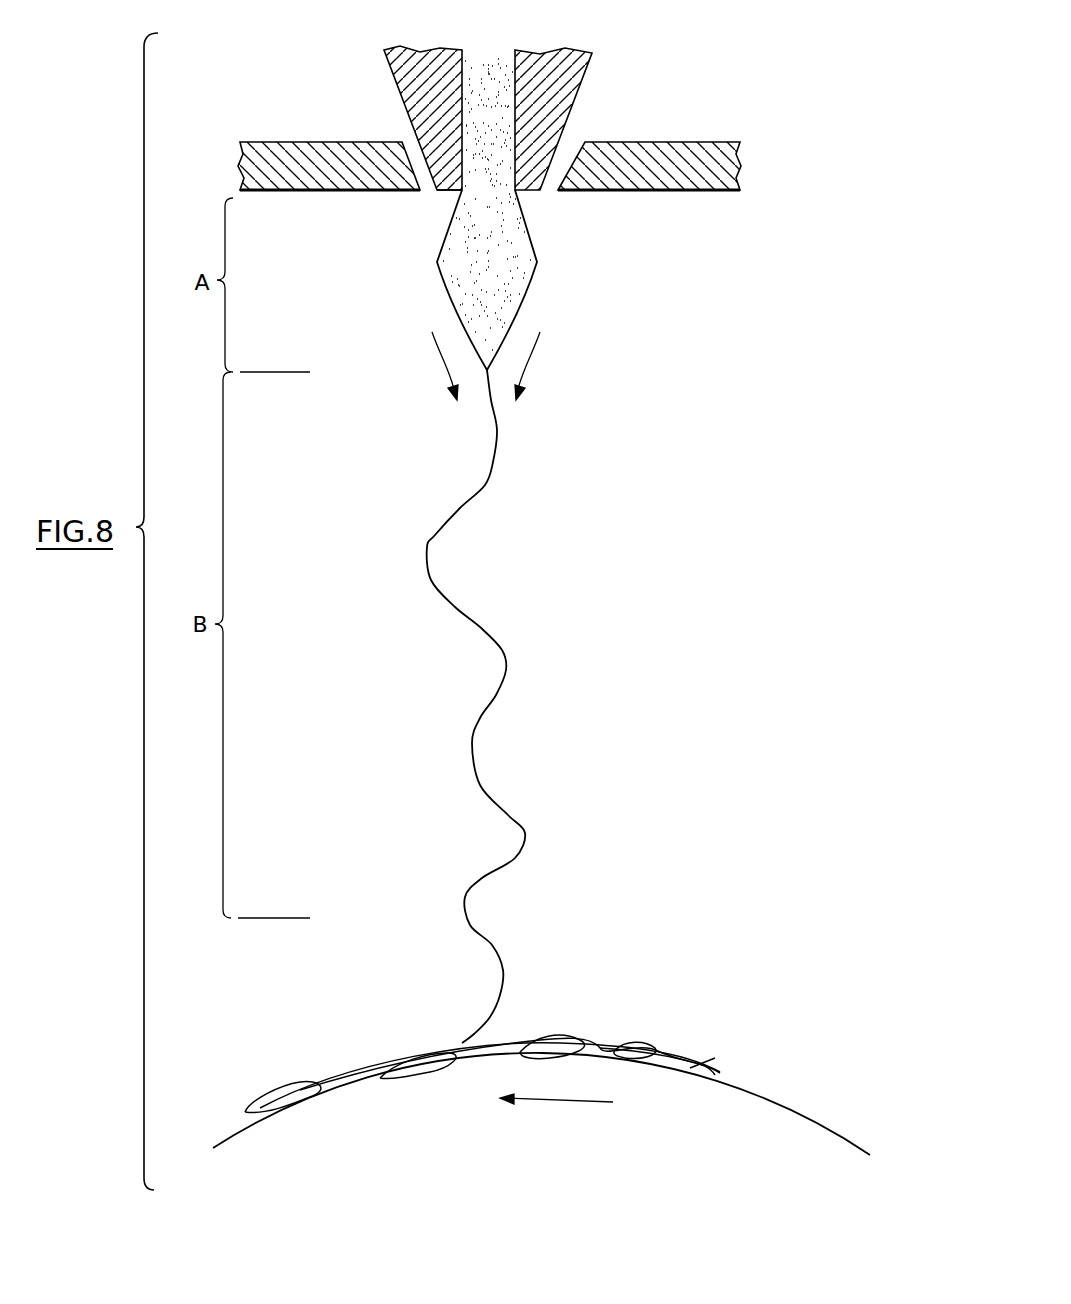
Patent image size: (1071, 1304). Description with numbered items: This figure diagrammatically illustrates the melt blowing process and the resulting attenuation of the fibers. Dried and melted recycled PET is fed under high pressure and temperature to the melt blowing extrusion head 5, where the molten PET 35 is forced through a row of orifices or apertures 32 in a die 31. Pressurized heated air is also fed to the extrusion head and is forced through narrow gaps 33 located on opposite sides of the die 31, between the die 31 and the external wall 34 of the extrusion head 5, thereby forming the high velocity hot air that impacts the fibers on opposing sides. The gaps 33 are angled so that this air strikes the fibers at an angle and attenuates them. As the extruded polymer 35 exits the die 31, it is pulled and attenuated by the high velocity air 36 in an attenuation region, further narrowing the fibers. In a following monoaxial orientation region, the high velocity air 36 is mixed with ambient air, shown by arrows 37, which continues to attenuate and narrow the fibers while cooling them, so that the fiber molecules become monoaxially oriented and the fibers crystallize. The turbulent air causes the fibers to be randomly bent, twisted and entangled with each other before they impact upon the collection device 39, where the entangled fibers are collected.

The melt blowing extrusion head 5 is at (668, 79).
The die 31 is at (575, 55).
The apertures 32 is at (500, 210).
The gaps 33 is at (428, 190).
The external wall 34 is at (245, 162).
The molten PET 35 is at (476, 44).
The high velocity air 36 is at (407, 136).
The ambient air 37 is at (430, 292).
The collection device 39 is at (793, 1110).